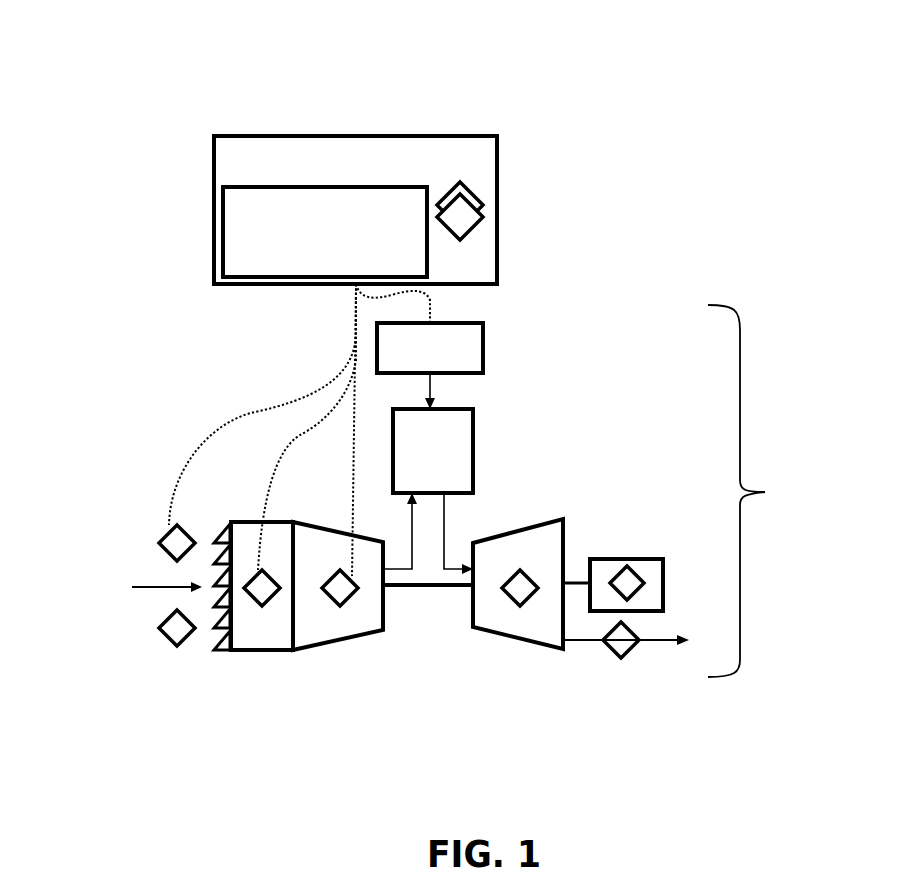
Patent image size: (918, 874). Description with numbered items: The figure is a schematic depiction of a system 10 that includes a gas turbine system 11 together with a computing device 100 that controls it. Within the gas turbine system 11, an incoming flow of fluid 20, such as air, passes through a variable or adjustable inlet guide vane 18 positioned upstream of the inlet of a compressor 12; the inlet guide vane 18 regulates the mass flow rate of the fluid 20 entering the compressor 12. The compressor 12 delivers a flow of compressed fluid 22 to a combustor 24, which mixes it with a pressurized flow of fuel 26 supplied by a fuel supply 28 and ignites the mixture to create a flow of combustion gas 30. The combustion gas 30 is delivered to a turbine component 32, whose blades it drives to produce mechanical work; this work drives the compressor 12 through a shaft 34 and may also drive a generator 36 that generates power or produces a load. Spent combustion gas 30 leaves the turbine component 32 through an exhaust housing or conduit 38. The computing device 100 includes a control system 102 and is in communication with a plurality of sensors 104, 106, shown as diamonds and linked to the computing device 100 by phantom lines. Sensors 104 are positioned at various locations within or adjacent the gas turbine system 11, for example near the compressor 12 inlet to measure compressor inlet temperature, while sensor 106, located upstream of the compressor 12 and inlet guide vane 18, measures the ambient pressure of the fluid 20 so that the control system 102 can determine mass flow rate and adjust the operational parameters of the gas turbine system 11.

The system 10 is at (461, 60).
The gas turbine system 11 is at (765, 492).
The compressor 12 is at (328, 646).
The inlet guide vane 18 is at (237, 651).
The flow of fluid 20 is at (151, 583).
The flow of compressed fluid 22 is at (403, 575).
The combustor 24 is at (433, 451).
The pressurized flow of fuel 26 is at (432, 393).
The fuel supply 28 is at (430, 348).
The flow of combustion gas 30 is at (452, 575).
The turbine component 32 is at (535, 650).
The shaft 34 is at (410, 590).
The generator 36 is at (640, 558).
The exhaust housing or conduit 38 is at (670, 645).
The computing device 100 is at (355, 210).
The control system 102 is at (325, 232).
The sensor 104 is at (172, 644).
The sensor 106 is at (465, 235).